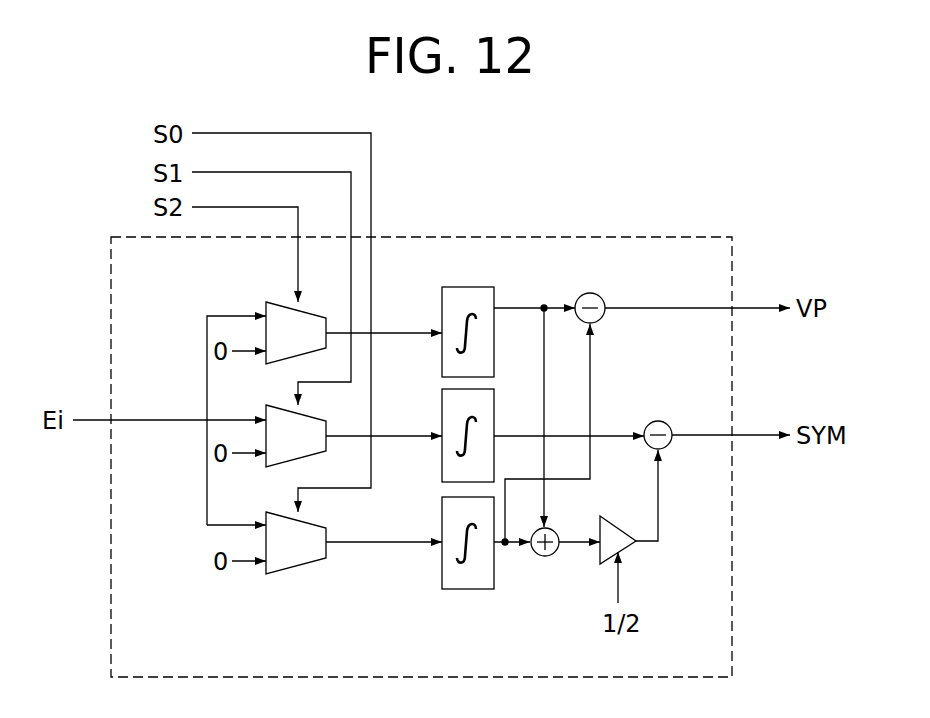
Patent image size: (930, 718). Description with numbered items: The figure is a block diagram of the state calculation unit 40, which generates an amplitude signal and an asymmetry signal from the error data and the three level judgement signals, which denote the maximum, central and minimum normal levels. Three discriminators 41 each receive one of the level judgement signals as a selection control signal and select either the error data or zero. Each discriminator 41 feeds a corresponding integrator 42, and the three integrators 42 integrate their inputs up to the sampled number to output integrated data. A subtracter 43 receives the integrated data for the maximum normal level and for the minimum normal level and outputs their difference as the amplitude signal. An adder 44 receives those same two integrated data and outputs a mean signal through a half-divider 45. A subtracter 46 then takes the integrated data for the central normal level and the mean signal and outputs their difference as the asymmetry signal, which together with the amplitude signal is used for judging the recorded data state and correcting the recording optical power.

The state calculation unit 40 is at (692, 237).
The discriminator 41 is at (265, 303).
The integrator 42 is at (442, 301).
The subtracter 43 is at (598, 296).
The adder 44 is at (545, 557).
The ½-divider 45 is at (624, 548).
The subtracter 46 is at (665, 421).